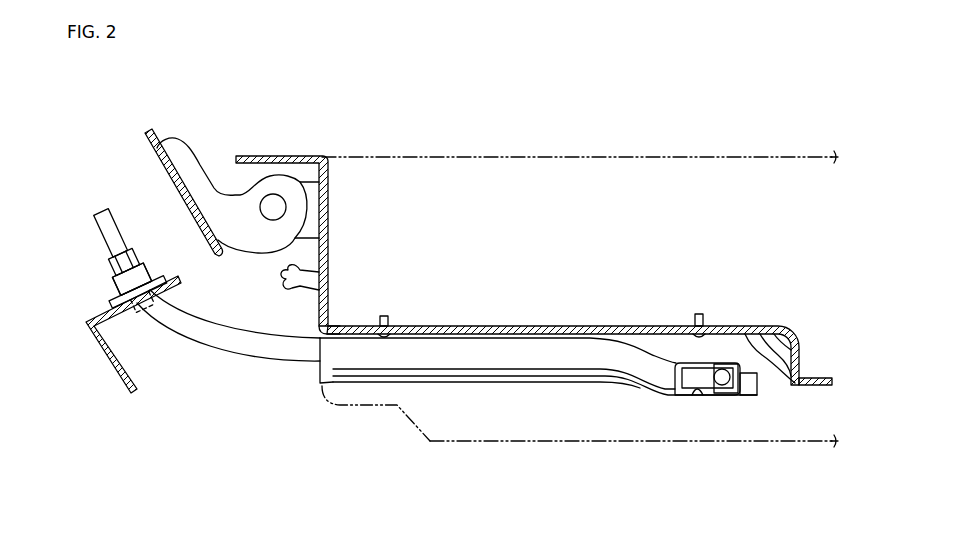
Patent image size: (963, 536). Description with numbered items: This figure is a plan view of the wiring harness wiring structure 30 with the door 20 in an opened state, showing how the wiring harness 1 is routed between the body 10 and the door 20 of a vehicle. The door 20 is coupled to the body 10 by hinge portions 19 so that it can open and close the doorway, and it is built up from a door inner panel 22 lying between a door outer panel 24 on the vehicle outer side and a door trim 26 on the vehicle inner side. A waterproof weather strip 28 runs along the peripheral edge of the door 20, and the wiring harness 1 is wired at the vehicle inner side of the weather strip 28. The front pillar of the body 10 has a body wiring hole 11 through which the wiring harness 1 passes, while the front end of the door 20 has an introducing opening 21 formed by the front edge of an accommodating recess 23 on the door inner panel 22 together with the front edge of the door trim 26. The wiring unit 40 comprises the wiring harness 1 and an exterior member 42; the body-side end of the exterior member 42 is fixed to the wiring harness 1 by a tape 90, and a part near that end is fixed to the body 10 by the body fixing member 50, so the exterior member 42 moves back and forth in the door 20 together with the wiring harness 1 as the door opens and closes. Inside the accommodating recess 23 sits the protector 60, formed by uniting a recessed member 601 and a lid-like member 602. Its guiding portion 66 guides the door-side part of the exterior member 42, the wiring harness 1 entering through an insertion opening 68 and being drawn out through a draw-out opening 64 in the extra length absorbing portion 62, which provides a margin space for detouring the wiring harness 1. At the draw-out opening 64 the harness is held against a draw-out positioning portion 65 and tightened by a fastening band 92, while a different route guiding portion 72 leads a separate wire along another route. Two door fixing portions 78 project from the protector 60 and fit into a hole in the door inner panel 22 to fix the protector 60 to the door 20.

The wiring harness 1 is at (101, 236).
The body 10 is at (162, 124).
The body wiring hole 11 is at (120, 299).
The hinge portion 19 is at (273, 205).
The door 20 is at (314, 142).
The introducing opening 21 is at (327, 313).
The door inner panel 22 is at (540, 325).
The accommodating recess 23 is at (444, 325).
The door outer panel 24 is at (556, 155).
The door trim 26 is at (556, 443).
The weather strip 28 is at (312, 272).
The wiring harness wiring structure 30 is at (517, 384).
The wiring unit 40 is at (243, 384).
The exterior member 42 is at (119, 269).
The body fixing member 50 is at (152, 274).
The protector 60 is at (609, 334).
The recessed member 601 is at (484, 350).
The lid-like member 602 is at (517, 378).
The extra length absorbing portion 62 is at (762, 338).
The draw-out opening 64 is at (702, 393).
The draw-out positioning portion 65 is at (724, 360).
The guiding portion 66 is at (451, 371).
The insertion opening 68 is at (343, 392).
The different route guiding portion 72 is at (786, 365).
The door fixing portion 78 is at (386, 315).
The tape 90 is at (134, 250).
The fastening band 92 is at (760, 396).